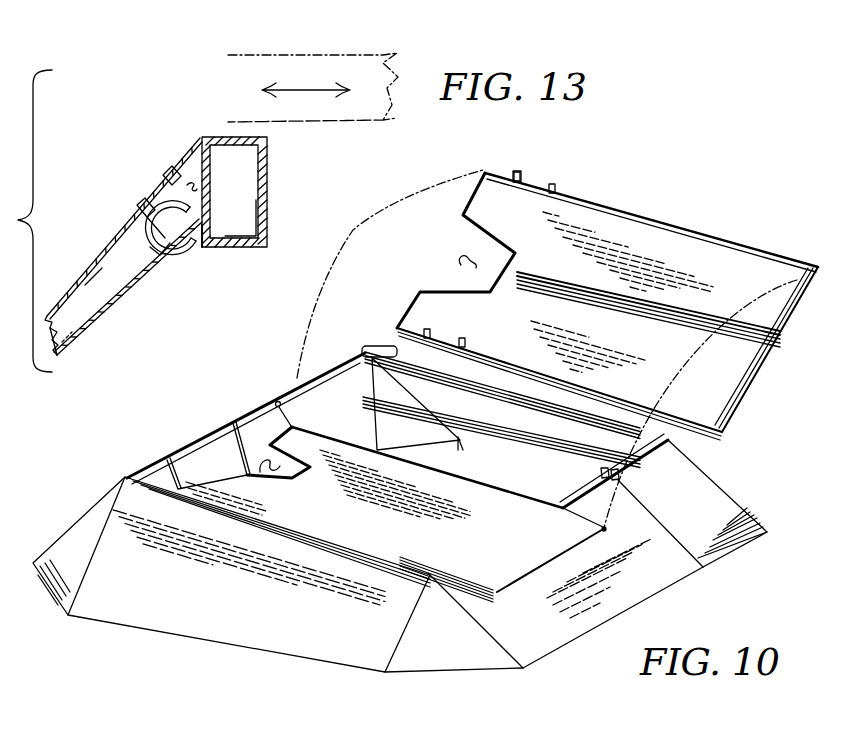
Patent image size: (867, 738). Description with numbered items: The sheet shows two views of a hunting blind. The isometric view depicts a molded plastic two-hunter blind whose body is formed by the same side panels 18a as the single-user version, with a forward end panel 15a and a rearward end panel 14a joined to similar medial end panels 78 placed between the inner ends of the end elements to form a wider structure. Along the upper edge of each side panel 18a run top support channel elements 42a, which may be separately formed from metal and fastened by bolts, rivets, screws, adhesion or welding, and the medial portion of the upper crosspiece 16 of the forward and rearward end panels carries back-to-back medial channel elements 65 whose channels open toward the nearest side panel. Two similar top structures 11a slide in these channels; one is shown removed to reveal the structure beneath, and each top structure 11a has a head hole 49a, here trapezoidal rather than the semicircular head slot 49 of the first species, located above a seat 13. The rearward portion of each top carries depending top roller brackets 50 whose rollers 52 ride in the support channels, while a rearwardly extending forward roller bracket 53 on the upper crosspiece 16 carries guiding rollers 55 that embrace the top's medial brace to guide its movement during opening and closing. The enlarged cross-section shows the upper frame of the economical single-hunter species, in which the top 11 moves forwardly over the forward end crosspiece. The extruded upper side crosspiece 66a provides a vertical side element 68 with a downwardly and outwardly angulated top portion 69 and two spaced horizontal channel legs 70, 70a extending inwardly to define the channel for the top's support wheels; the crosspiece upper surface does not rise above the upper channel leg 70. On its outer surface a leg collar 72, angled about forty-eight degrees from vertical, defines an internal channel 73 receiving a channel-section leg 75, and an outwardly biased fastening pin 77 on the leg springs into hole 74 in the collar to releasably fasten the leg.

In FIG. 13, the top structure 11 is at (330, 54).
In FIG. 13, the upper channel leg 70 is at (268, 160).
In FIG. 13, the vertical side element 68 is at (217, 200).
In FIG. 13, the lower channel leg 70a is at (240, 233).
In FIG. 13, the upper side crosspiece 66a is at (206, 250).
In FIG. 13, the leg 75 is at (96, 266).
In FIG. 13, the leg collar 72 is at (177, 249).
In FIG. 13, the hole 74 is at (142, 210).
In FIG. 13, the fastening pin 77 is at (141, 205).
In FIG. 13, the internal channel 73 is at (184, 162).
In FIG. 13, the angulated top portion 69 is at (184, 169).
In FIG. 10, the top structure 11a is at (698, 232).
In FIG. 10, the head hole 49a is at (454, 265).
In FIG. 10, the head slot 49 is at (263, 472).
In FIG. 10, the roller 52 is at (552, 184).
In FIG. 10, the top roller bracket 50 is at (548, 193).
In FIG. 10, the rearward end panel 14a is at (315, 373).
In FIG. 10, the upper crosspiece 16 is at (142, 467).
In FIG. 10, the medial channel element 65 is at (246, 418).
In FIG. 10, the medial end panel 78 is at (278, 402).
In FIG. 10, the top support channel element 42a is at (390, 355).
In FIG. 10, the seat 13 is at (210, 455).
In FIG. 10, the forward roller bracket 53 is at (602, 478).
In FIG. 10, the guiding roller 55 is at (620, 485).
In FIG. 10, the side panel 18a is at (723, 483).
In FIG. 10, the forward end panel 15a is at (723, 566).